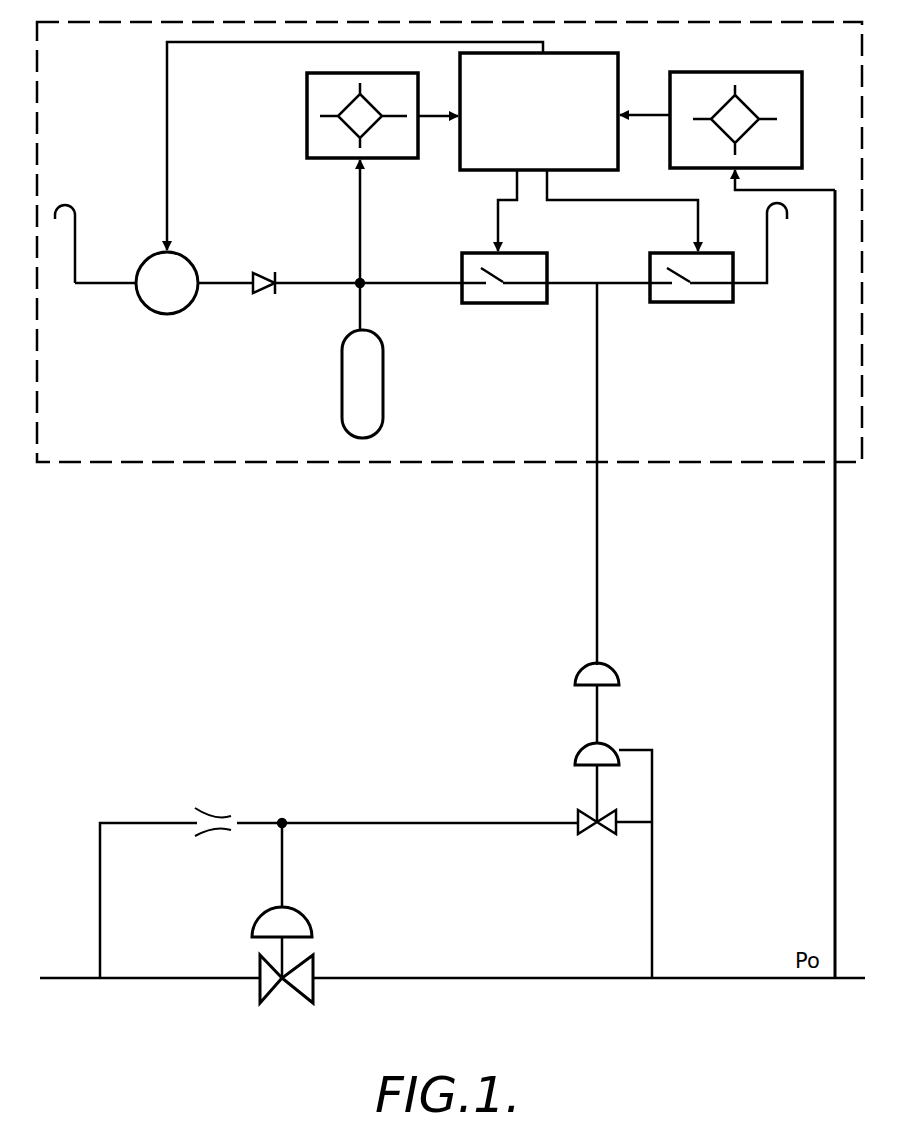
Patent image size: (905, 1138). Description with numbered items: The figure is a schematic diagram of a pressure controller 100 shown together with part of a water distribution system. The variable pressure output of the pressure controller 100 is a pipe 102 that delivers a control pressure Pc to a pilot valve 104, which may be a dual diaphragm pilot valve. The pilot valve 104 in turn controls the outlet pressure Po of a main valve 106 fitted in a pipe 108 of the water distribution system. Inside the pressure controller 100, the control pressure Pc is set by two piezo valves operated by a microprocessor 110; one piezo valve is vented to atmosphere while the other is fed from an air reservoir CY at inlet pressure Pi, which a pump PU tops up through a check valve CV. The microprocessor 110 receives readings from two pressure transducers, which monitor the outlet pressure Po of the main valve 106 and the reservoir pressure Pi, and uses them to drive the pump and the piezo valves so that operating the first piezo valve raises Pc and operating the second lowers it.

The pressure controller 100 is at (449, 269).
The pipe 102 is at (597, 522).
The pilot valve 104 is at (672, 633).
The main valve 106 is at (339, 905).
The pipe 108 is at (80, 978).
The microprocessor 110 is at (516, 154).